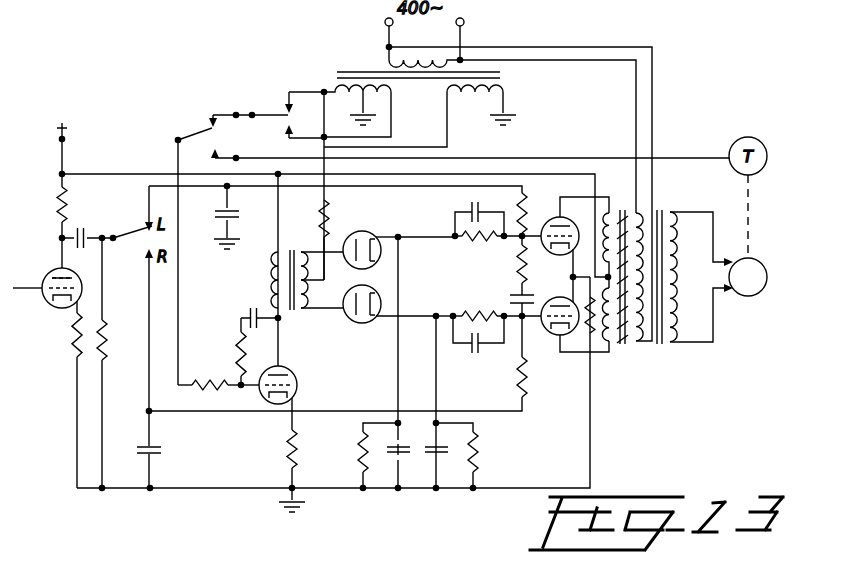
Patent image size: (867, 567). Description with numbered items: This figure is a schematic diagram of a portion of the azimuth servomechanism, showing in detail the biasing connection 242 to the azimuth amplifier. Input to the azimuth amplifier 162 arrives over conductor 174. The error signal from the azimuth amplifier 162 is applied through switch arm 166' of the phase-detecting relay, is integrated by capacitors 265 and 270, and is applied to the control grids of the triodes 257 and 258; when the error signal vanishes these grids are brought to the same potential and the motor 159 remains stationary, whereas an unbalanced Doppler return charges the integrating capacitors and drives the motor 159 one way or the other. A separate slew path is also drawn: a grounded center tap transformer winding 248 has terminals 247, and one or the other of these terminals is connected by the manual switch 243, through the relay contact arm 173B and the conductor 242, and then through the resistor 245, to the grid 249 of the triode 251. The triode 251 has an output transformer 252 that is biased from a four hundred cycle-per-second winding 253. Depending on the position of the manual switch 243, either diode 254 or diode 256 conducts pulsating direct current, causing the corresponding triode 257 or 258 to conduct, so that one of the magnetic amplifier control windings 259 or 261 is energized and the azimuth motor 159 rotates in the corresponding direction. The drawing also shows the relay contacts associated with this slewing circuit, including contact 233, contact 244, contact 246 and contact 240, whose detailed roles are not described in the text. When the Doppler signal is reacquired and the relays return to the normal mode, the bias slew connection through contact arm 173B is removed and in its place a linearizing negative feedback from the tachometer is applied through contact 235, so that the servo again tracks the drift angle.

The contact arm 173B is at (198, 127).
The relay contact arm 233 is at (213, 114).
The conductor 242 is at (178, 160).
The manual switch 243 is at (267, 112).
The fixed contact 244 is at (287, 100).
The fixed contact 246 is at (287, 127).
The contact 235 is at (236, 158).
The transformer winding 248 is at (323, 92).
The winding lead 240 is at (334, 100).
The terminals 247 is at (331, 132).
The 400 c.p.s. winding 253 is at (420, 116).
The switch arm 166' is at (122, 221).
The capacitor 265 is at (232, 211).
The conductor 174 is at (40, 270).
The azimuth amplifier 162 is at (63, 310).
The diode 254 is at (386, 218).
The output transformer 252 is at (293, 311).
The diode 256 is at (374, 322).
The resistor 245 is at (240, 369).
The grid 249 is at (258, 388).
The triode 251 is at (295, 386).
The capacitor 270 is at (163, 447).
The triode 257 is at (557, 216).
The magnetic amplifier control winding 259 is at (609, 212).
The triode 258 is at (556, 335).
The magnetic amplifier control winding 261 is at (610, 343).
The motor 159 is at (756, 296).